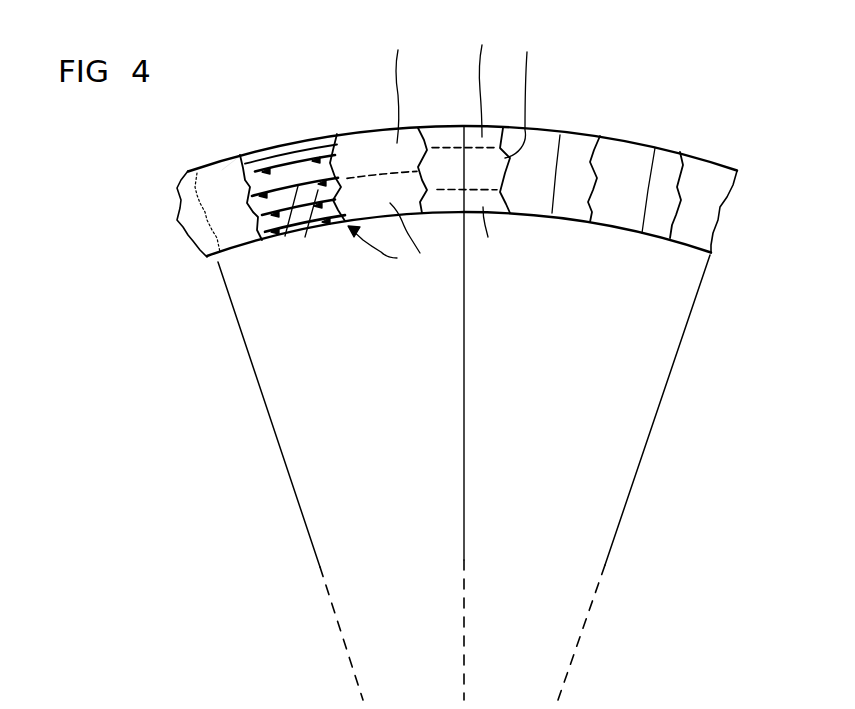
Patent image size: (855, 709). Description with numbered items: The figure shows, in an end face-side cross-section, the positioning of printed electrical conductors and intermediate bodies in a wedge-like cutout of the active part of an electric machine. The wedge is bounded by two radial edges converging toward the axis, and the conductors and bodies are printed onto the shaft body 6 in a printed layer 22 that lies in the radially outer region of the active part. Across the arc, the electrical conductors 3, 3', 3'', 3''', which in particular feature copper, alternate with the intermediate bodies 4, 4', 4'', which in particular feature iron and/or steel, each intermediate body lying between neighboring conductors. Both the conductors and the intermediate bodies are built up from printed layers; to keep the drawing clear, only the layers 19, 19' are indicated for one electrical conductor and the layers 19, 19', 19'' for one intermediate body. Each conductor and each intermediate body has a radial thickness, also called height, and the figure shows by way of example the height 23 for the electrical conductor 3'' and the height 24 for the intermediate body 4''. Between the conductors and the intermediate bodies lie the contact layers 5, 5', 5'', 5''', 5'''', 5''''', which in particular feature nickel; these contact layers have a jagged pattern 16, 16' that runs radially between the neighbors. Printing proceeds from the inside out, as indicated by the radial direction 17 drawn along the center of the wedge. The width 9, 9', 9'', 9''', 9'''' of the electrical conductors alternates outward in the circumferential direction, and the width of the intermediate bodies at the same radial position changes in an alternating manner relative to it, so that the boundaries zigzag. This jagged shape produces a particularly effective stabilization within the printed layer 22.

The electrical conductor 3 is at (200, 141).
The electrical conductor 3' is at (382, 118).
The electrical conductor 3'' is at (548, 137).
The electrical conductor 3''' is at (739, 173).
The intermediate body 4 is at (291, 129).
The intermediate body 4' is at (464, 124).
The intermediate body 4'' is at (646, 148).
The contact layer 5 is at (233, 170).
The contact layer 5' is at (338, 148).
The contact layer 5'' is at (421, 142).
The contact layer 5''' is at (503, 142).
The zigzag joint 5'''' is at (609, 153).
The zigzag joint 5''''' is at (695, 166).
The shaft body 6 is at (677, 285).
The width 9 is at (305, 251).
The width 9' is at (298, 256).
The width 9'' is at (337, 247).
The width 9''' is at (279, 115).
The groove 9'''' is at (295, 125).
The jagged pattern 16 is at (279, 472).
The jagged pattern 16' is at (383, 263).
The radial direction 17 is at (465, 425).
The layer 19 is at (446, 149).
The layer 19' is at (524, 92).
The layer 19'' is at (482, 77).
The printed layer 22 is at (178, 221).
The height 23 is at (558, 172).
The height 24 is at (647, 183).